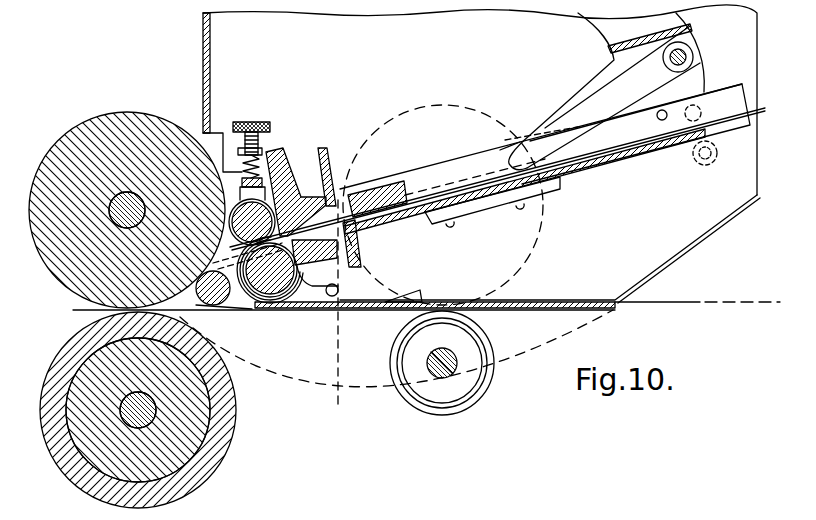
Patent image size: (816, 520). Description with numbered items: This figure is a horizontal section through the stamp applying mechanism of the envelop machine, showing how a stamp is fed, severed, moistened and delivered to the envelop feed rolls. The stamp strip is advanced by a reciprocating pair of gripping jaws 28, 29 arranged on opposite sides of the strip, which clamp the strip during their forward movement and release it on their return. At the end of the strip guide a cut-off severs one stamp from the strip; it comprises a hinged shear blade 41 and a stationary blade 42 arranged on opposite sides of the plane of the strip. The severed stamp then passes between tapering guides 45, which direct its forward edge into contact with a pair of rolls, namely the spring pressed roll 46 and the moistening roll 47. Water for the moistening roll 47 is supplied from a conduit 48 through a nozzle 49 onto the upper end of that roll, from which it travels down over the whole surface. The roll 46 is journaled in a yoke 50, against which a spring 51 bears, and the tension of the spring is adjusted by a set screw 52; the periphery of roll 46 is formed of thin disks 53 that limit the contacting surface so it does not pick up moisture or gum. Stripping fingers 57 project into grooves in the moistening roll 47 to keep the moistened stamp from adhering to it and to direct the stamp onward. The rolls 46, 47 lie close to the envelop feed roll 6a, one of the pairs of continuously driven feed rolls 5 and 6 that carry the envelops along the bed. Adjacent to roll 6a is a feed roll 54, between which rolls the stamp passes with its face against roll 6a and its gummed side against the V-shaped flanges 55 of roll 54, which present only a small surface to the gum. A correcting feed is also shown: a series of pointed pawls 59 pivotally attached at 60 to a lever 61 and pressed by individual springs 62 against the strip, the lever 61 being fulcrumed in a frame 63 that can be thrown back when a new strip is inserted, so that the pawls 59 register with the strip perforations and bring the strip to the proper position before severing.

The feed roll 6a is at (75, 138).
The feed roll 6 is at (210, 462).
The feed roll 5 is at (495, 384).
The set screw 52 is at (255, 122).
The spring 51 is at (262, 152).
The yoke 50 is at (265, 182).
The thin disks 53 is at (237, 232).
The spring pressed roll 46 is at (232, 214).
The moistening roll 47 is at (276, 294).
The stripping fingers 57 is at (268, 298).
The V-shaped flanges 55 is at (218, 305).
The feed roll 54 is at (248, 300).
The nozzle 49 is at (333, 297).
The tapering guides 45 is at (298, 200).
The hinged shear blade 41 is at (330, 165).
The gripping jaw 29 is at (386, 192).
The gripping jaw 28 is at (388, 230).
The stationary blade 42 is at (362, 263).
The conduit 48 is at (332, 393).
The lever 61 is at (712, 84).
The springs 62 is at (592, 77).
The frame 63 is at (612, 49).
The pivot 60 is at (690, 56).
The pointed pawls 59 is at (548, 131).